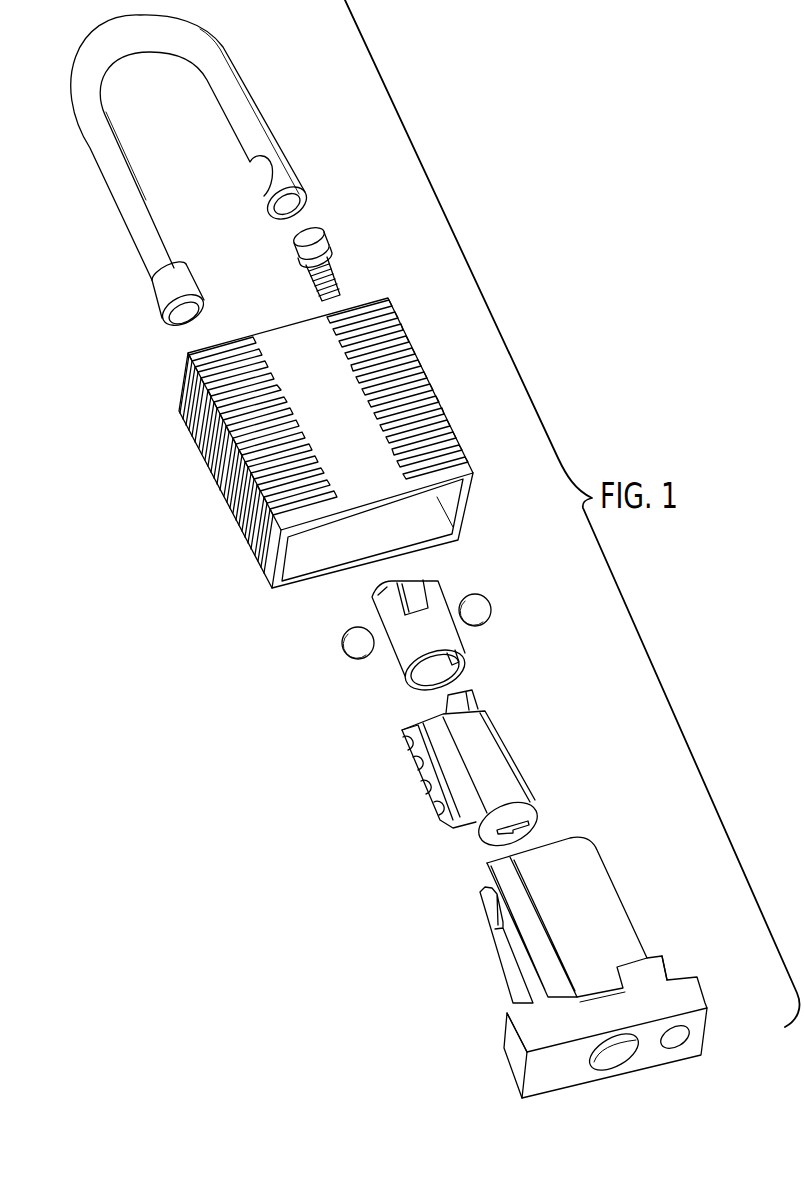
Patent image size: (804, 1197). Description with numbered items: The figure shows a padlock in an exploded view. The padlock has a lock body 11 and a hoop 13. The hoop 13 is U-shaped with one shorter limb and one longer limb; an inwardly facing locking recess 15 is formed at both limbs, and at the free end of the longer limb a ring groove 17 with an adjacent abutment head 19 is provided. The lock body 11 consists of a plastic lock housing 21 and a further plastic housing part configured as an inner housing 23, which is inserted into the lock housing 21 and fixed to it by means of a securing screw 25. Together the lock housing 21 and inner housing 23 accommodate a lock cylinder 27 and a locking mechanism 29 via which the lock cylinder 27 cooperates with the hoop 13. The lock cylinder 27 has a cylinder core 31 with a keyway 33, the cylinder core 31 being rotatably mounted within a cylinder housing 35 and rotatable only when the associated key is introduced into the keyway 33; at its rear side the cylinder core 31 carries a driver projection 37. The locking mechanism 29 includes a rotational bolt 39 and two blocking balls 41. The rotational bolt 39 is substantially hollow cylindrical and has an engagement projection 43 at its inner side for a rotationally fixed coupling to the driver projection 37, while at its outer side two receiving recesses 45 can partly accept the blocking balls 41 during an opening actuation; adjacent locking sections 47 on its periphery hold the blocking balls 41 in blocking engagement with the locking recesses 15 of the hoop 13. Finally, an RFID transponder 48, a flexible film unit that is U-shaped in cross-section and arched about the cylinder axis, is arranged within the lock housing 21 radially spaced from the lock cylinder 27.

The lock body 11 is at (178, 632).
The hoop 13 is at (90, 230).
The locking recess 15 is at (241, 176).
The ring groove 17 is at (144, 296).
The abutment head 19 is at (167, 307).
The lock housing 21 is at (342, 387).
The inner housing 23 is at (547, 1078).
The securing screw 25 is at (337, 265).
The lock cylinder 27 is at (490, 747).
The locking mechanism 29 is at (322, 664).
The cylinder core 31 is at (485, 834).
The keyway 33 is at (514, 826).
The cylinder housing 35 is at (447, 760).
The driver projection 37 is at (470, 695).
The rotational bolt 39 is at (383, 659).
The blocking balls 41 is at (491, 604).
The engagement projection 43 is at (465, 657).
The receiving recesses 45 is at (406, 579).
The locking sections 47 is at (375, 593).
The RFID transponder 48 is at (587, 908).